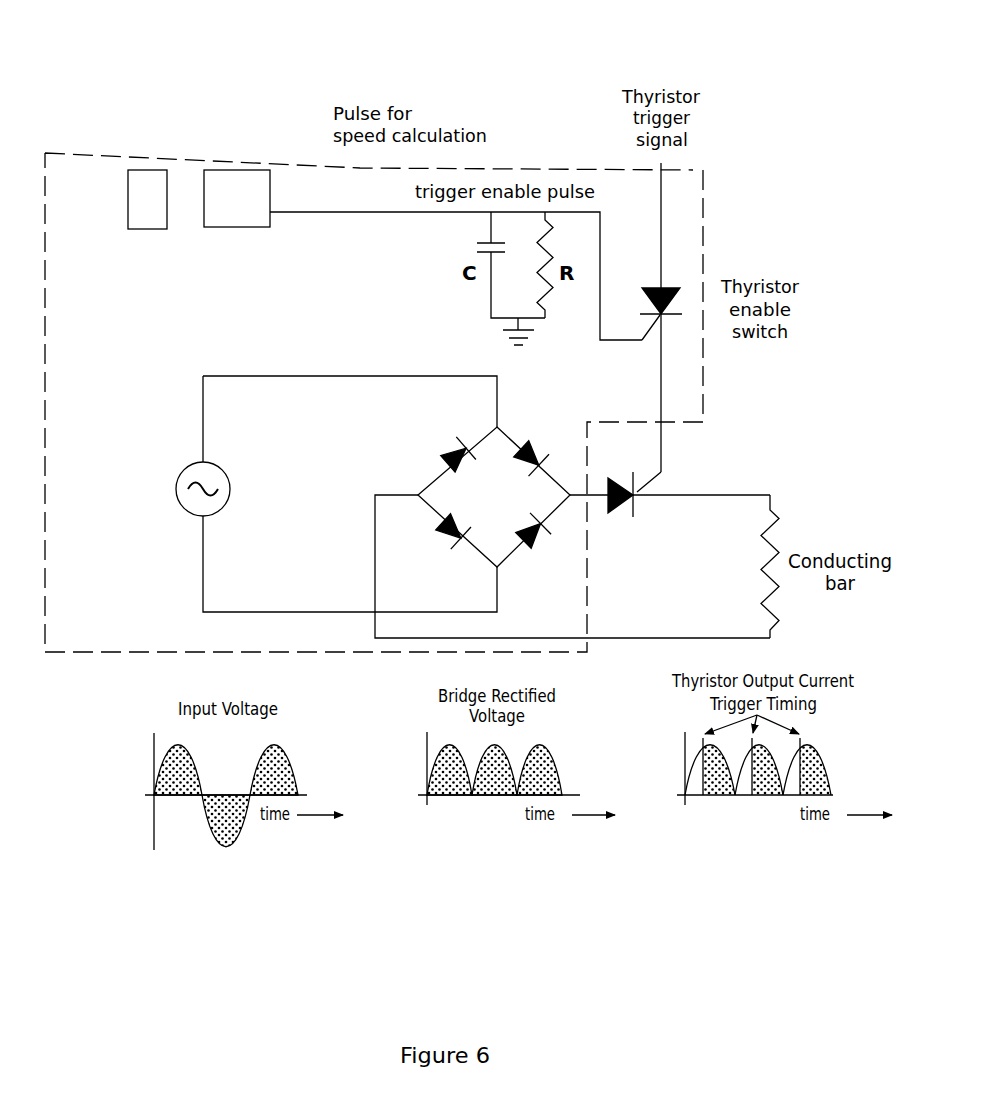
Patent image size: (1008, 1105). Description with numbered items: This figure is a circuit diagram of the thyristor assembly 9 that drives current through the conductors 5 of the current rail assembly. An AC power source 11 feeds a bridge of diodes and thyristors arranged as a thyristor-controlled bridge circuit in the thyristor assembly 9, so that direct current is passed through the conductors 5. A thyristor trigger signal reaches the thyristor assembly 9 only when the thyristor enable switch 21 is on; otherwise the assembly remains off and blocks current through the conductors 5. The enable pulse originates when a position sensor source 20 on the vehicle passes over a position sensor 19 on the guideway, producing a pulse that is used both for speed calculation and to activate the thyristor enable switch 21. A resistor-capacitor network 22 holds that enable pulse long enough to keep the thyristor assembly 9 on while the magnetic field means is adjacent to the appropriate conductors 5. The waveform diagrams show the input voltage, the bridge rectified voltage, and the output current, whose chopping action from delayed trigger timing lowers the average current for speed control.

The conductor 5 is at (771, 602).
The thyristor assembly 9 is at (640, 507).
The AC power source 11 is at (127, 608).
The position sensor 19 is at (220, 212).
The position sensor source 20 is at (155, 214).
The thyristor enable switch 21 is at (671, 277).
The resistor-capacitor (RC) network 22 is at (530, 297).